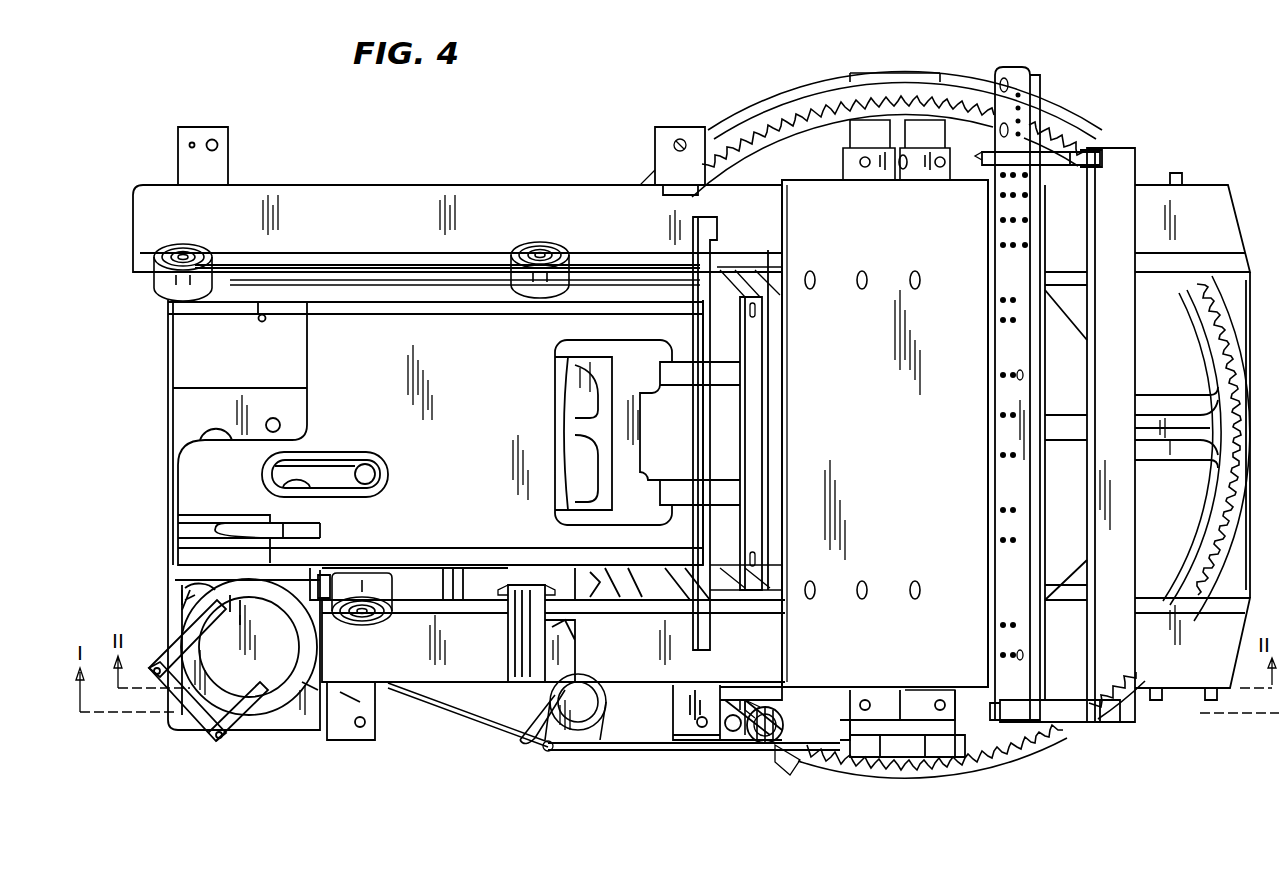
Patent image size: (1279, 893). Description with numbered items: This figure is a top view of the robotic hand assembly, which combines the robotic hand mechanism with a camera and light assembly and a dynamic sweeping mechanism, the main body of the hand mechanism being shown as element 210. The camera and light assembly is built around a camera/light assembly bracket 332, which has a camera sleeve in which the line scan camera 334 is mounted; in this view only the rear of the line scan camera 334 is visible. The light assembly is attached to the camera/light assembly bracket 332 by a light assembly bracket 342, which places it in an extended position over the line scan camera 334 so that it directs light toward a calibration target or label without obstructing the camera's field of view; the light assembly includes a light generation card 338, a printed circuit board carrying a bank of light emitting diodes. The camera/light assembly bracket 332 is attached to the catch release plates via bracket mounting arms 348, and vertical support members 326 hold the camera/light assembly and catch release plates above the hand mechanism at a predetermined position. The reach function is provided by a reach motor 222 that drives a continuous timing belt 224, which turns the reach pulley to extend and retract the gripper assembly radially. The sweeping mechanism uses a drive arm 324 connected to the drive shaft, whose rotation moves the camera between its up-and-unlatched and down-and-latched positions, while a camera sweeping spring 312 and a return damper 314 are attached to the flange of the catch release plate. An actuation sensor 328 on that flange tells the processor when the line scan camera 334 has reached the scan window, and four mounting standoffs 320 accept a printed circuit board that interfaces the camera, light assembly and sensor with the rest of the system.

The carriage body 210 is at (380, 335).
The reach motor 222 is at (222, 720).
The continuous timing belt 224 is at (415, 690).
The camera sweeping spring 312 is at (733, 731).
The return damper 314 is at (790, 748).
The mounting standoffs 320 is at (672, 128).
The drive arm 324 is at (556, 735).
The vertical support members 326 is at (897, 742).
The actuation sensor 328 is at (604, 750).
The camera/light assembly bracket 332 is at (810, 180).
The line scan camera 334 is at (770, 248).
The light generation card 338 is at (1010, 67).
The light assembly bracket 342 is at (1082, 160).
The bracket mounting arms 348 is at (940, 712).